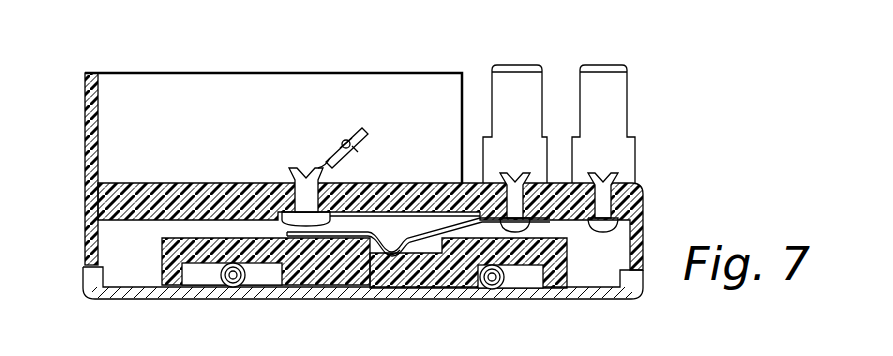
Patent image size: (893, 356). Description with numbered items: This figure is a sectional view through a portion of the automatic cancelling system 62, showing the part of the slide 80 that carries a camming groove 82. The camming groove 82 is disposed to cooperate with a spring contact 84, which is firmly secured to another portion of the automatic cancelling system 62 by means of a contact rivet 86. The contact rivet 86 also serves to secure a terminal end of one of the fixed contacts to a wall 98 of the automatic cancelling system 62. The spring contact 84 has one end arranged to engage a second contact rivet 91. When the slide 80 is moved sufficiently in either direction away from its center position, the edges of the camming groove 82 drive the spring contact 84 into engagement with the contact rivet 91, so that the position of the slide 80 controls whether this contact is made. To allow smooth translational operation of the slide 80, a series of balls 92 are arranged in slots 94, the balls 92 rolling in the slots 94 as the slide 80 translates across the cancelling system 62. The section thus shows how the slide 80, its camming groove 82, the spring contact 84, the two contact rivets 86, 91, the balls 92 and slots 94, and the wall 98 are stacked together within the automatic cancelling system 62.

The automatic cancelling system 62 is at (200, 73).
The slide 80 is at (160, 258).
The camming groove 82 is at (413, 252).
The spring contact 84 is at (367, 236).
The contact rivet 86 is at (503, 175).
The contact rivet 91 is at (293, 165).
The balls 92 is at (224, 264).
The slots 94 is at (273, 268).
The wall 98 is at (115, 212).